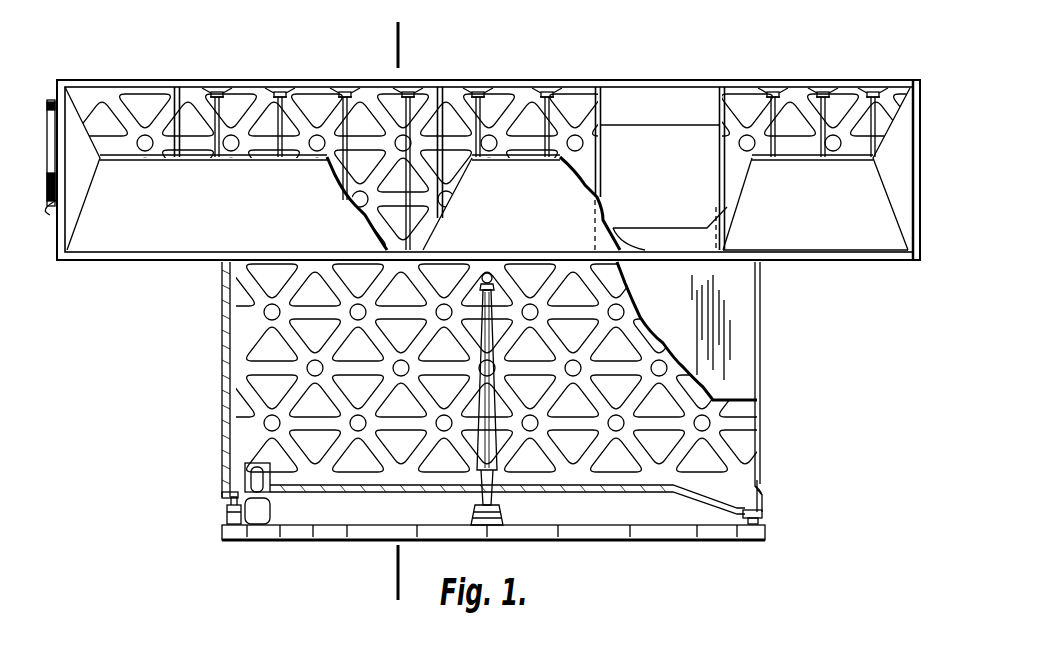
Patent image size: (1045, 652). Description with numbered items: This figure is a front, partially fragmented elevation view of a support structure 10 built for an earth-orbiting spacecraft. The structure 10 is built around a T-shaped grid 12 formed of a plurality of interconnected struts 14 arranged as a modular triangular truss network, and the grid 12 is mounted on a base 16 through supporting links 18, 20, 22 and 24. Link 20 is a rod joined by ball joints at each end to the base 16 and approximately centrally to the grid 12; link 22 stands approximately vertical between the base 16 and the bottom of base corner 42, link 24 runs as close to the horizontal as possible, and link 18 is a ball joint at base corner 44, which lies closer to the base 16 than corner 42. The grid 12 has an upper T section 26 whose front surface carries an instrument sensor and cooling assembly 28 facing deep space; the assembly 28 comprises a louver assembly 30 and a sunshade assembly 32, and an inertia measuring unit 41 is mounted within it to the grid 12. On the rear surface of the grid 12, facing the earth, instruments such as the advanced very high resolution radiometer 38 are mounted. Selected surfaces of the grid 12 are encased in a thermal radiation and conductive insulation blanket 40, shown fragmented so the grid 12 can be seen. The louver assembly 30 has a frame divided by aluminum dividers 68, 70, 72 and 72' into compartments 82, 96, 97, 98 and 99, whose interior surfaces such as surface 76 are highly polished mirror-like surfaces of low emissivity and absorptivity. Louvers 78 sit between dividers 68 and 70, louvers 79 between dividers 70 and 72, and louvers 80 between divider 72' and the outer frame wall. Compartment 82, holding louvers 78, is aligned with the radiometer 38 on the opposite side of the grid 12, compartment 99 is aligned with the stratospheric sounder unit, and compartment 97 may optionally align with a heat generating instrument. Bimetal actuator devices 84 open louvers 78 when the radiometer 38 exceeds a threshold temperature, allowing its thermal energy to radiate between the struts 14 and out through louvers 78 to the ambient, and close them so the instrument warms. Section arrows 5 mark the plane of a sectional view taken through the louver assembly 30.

The support structure 10 is at (708, 67).
The T-shaped grid 12 is at (268, 386).
The struts 14 is at (240, 336).
The base 16 is at (727, 538).
The supporting link 18 is at (766, 512).
The supporting link 20 is at (503, 450).
The supporting link 22 is at (222, 518).
The supporting link 24 is at (240, 483).
The upper T section 26 is at (50, 100).
The instrument sensor and cooling assembly 28 is at (879, 215).
The louver assembly 30 is at (850, 70).
The sunshade assembly 32 is at (848, 245).
The advanced very high resolution radiometer 38 is at (80, 218).
The thermal radiation and conductive insulation blanket 40 is at (100, 100).
The Inertia Measuring Unit 41 is at (623, 112).
The base corner 42 is at (222, 497).
The base corner 44 is at (767, 492).
The divider 68 is at (187, 107).
The divider 70 is at (452, 110).
The divider 72 is at (630, 195).
The divider 72' is at (670, 213).
The interior compartment surface 76 is at (900, 130).
The louvers 78 is at (262, 160).
The louvers 79 is at (530, 160).
The louvers 80 is at (848, 160).
The compartment 82 is at (238, 107).
The actuator devices 84 is at (342, 92).
The compartment 96 is at (140, 103).
The compartment 97 is at (784, 120).
The compartment 98 is at (672, 105).
The compartment 99 is at (522, 122).
The section line 5- 5 is at (385, 33).